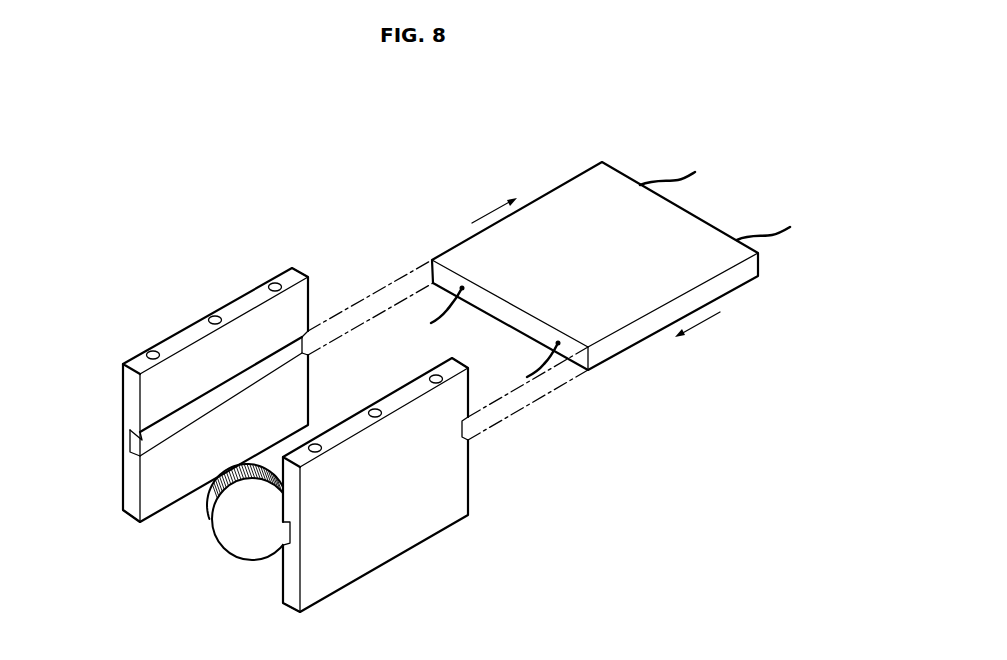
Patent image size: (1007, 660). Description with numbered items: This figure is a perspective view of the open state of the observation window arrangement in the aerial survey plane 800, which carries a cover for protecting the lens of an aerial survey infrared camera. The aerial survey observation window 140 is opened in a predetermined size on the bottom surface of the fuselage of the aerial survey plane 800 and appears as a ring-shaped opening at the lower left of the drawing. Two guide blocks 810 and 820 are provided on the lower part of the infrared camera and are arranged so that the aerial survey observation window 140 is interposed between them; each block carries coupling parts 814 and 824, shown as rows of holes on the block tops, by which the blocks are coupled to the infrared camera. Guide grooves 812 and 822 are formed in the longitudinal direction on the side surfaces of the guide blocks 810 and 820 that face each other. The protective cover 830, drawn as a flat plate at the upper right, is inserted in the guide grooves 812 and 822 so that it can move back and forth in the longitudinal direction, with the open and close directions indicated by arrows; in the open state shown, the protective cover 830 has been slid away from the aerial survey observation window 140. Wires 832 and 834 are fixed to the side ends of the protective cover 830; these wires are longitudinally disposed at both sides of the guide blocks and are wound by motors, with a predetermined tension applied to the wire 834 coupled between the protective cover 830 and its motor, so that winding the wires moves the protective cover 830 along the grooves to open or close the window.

The aerial survey plane 800 is at (310, 148).
The guide block 810 is at (362, 558).
The guide groove 812 is at (280, 532).
The coupling part 814 is at (315, 452).
The guide block 820 is at (128, 402).
The guide groove 822 is at (133, 440).
The coupling part 824 is at (275, 283).
The protective cover 830 is at (612, 350).
The wire 832 is at (443, 312).
The wire 834 is at (755, 228).
The aerial survey observation window 140 is at (242, 523).